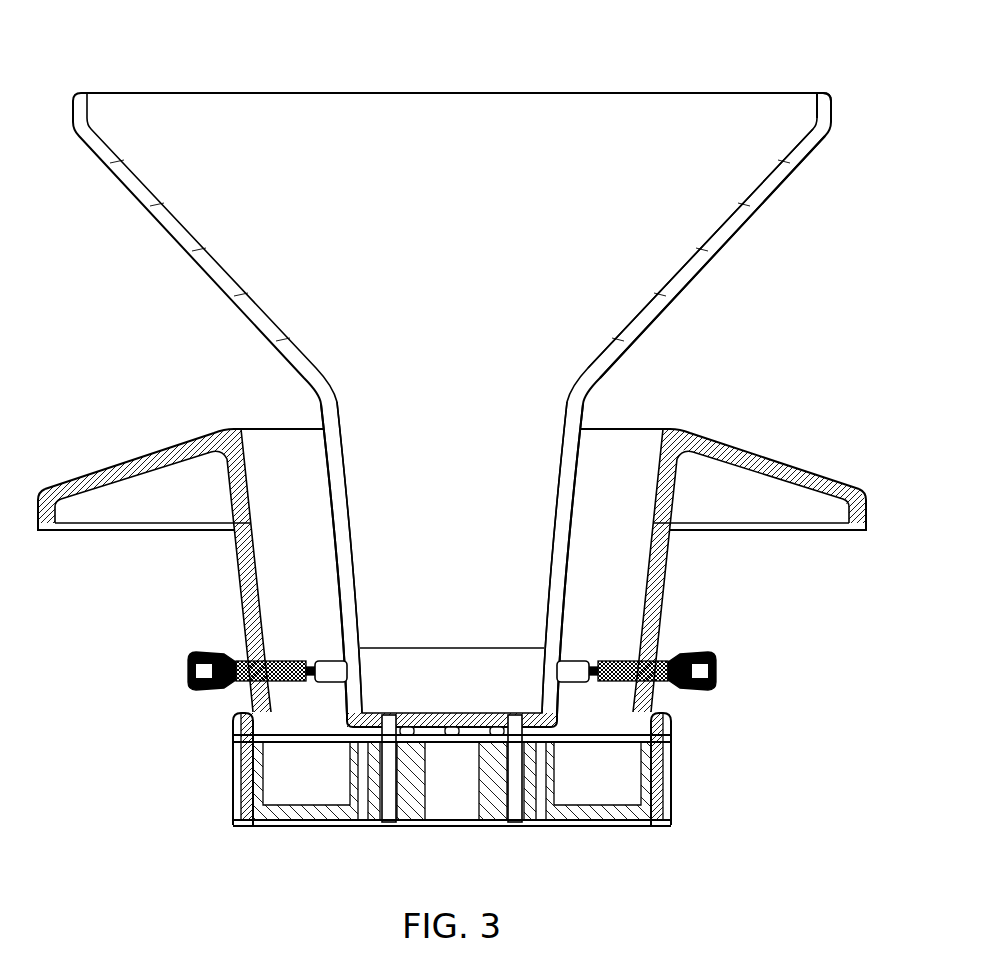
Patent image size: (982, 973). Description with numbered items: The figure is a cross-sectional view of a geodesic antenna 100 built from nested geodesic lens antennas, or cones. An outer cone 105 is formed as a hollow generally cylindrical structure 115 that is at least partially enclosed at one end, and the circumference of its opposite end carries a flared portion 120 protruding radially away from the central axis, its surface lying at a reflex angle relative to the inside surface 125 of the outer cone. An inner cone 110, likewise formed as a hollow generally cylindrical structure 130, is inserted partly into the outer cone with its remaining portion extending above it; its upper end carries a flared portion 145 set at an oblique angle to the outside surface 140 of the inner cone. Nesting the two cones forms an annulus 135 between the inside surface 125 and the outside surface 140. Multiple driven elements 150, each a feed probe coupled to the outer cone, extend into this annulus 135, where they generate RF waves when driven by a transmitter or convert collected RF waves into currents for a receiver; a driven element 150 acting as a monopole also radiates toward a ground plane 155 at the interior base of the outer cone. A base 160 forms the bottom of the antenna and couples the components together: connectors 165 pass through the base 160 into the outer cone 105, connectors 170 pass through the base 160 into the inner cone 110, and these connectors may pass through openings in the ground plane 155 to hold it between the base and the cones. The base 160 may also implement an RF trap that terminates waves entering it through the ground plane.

The geodesic antenna 100 is at (289, 57).
The outer cone 105 is at (757, 440).
The inner cone 110 is at (829, 86).
The hollow generally cylindrical structure 115 is at (668, 561).
The flared portion 120 is at (763, 507).
The inside surface 125 is at (640, 614).
The hollow generally cylindrical structure 130 is at (337, 578).
The annulus 135 is at (285, 458).
The outside surface 140 is at (582, 514).
The flared portion 145 is at (717, 250).
The driven element 150 is at (187, 672).
The ground plane 155 is at (231, 738).
The base 160 is at (677, 779).
The connector 165 is at (246, 827).
The connector 170 is at (516, 829).